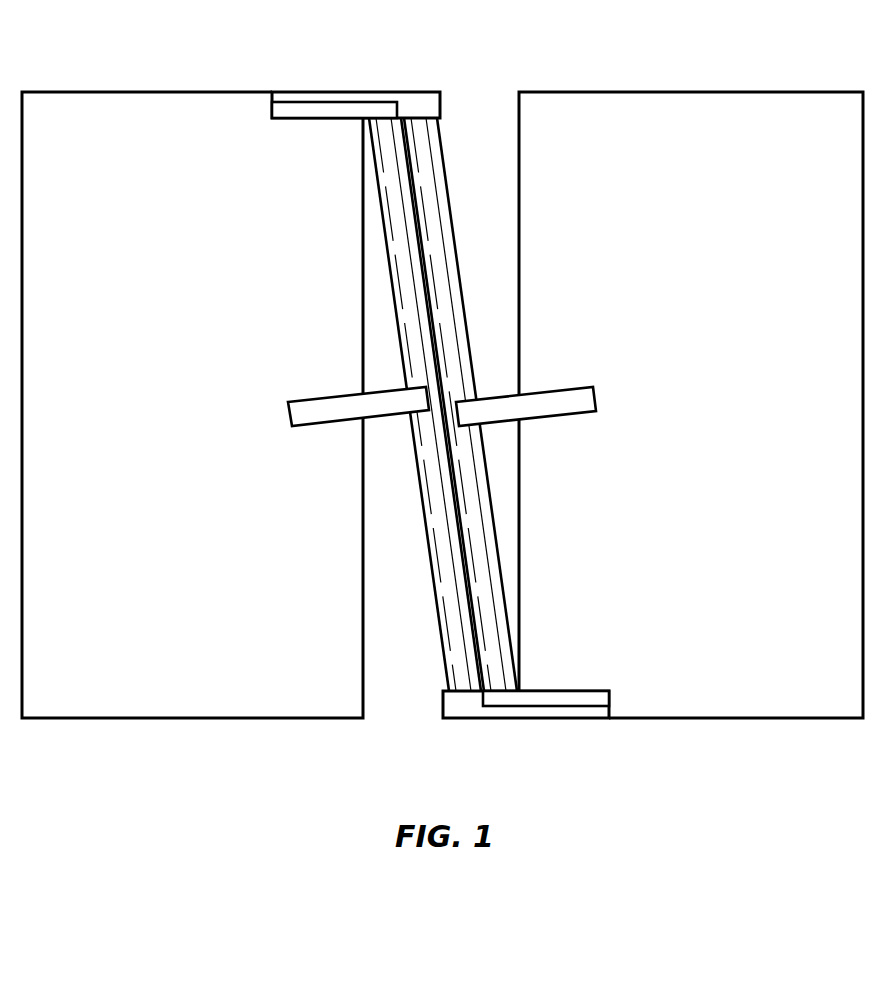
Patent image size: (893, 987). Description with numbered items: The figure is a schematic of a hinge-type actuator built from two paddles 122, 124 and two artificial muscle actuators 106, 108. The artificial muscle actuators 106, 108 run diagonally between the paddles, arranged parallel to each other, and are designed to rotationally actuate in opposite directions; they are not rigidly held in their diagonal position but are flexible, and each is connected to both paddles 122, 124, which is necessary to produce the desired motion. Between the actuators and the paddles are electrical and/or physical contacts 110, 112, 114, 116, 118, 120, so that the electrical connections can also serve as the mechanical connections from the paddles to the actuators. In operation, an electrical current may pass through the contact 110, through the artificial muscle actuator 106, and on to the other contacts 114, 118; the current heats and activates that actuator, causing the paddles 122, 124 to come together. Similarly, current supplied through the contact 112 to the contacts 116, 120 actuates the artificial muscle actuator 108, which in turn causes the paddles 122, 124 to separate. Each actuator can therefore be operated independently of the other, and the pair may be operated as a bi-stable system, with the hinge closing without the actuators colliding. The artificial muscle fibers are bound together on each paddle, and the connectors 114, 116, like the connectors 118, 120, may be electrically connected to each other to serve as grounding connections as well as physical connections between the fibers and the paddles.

The artificial muscle actuator 106 is at (443, 155).
The artificial muscle actuator 108 is at (385, 218).
The contact 110 is at (557, 386).
The contact 112 is at (327, 396).
The connector 114 is at (352, 90).
The connector 116 is at (328, 107).
The connector 118 is at (544, 701).
The connector 120 is at (520, 719).
The paddle 122 is at (163, 92).
The paddle 124 is at (701, 92).